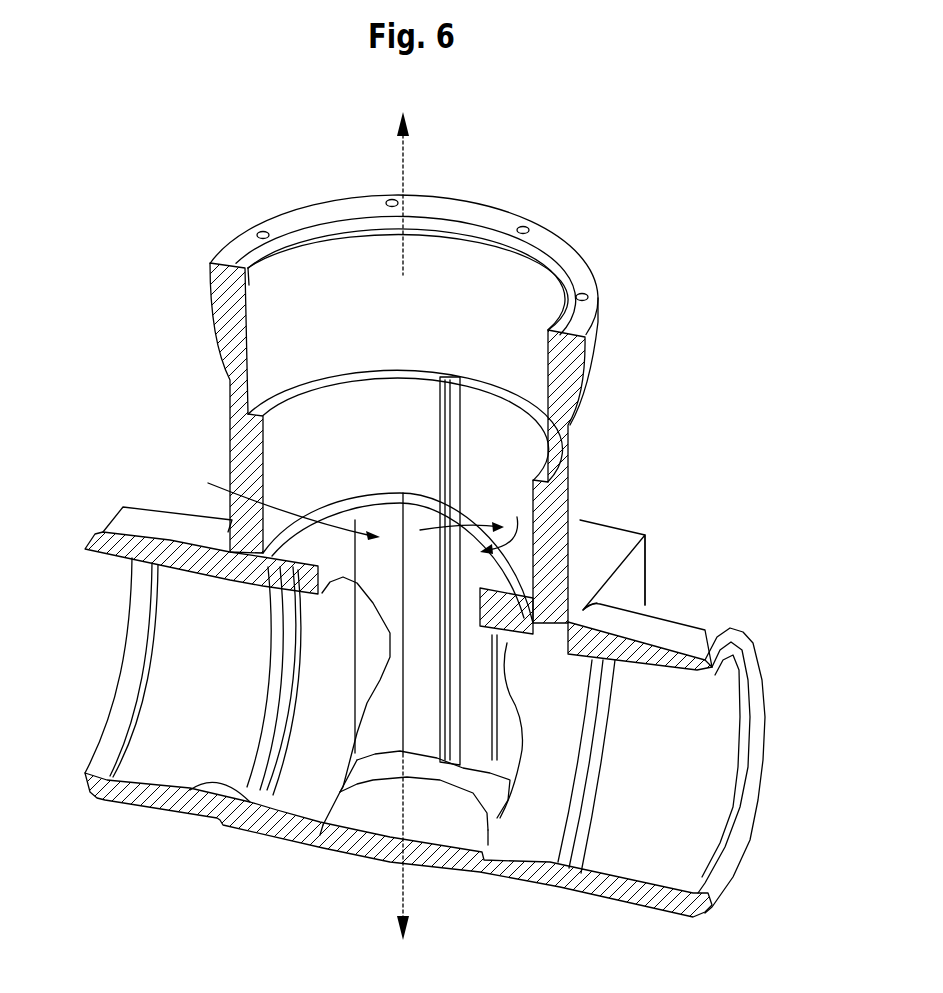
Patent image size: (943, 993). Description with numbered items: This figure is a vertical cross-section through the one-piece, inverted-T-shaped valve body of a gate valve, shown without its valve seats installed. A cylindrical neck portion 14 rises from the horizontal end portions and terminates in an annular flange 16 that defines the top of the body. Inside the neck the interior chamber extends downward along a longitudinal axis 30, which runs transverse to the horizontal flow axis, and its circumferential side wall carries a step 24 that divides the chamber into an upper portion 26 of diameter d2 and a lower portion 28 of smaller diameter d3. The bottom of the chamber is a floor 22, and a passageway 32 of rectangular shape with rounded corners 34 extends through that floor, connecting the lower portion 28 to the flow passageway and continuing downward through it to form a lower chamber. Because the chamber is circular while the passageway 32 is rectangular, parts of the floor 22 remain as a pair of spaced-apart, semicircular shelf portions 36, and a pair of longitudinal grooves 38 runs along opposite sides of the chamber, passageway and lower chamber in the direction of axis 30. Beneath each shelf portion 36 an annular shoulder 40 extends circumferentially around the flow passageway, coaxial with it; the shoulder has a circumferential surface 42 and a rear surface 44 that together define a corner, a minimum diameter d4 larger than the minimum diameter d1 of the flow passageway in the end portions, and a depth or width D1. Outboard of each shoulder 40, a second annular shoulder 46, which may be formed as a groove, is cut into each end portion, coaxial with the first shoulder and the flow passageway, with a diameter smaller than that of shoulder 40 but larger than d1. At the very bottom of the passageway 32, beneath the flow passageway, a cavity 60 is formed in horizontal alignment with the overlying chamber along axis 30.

The neck portion 14 is at (231, 383).
The annular flange 16 is at (328, 212).
The floor 22 is at (555, 575).
The step 24 is at (533, 416).
The upper portion of the chamber 26 is at (533, 318).
The lower portion of the chamber 28 is at (525, 446).
The longitudinal axis 30 is at (406, 160).
The passageway 32 is at (518, 518).
The rounded corners 34 is at (270, 497).
The shelf portions 36 is at (620, 563).
The longitudinal grooves 38 is at (466, 415).
The annular shoulder 40 is at (293, 808).
The circumferential surface 42 is at (362, 676).
The rear surface 44 is at (283, 800).
The second annular shoulder 46 is at (607, 697).
The cavity 60 is at (378, 842).
The minimum diameter of the flow passageway d1 is at (314, 578).
The diameter of the upper chamber portion d2 is at (545, 379).
The diameter of the lower chamber portion d3 is at (530, 494).
The minimum diameter of the annular shoulder d4 is at (319, 602).
The depth of the annular shoulder D1 is at (480, 875).